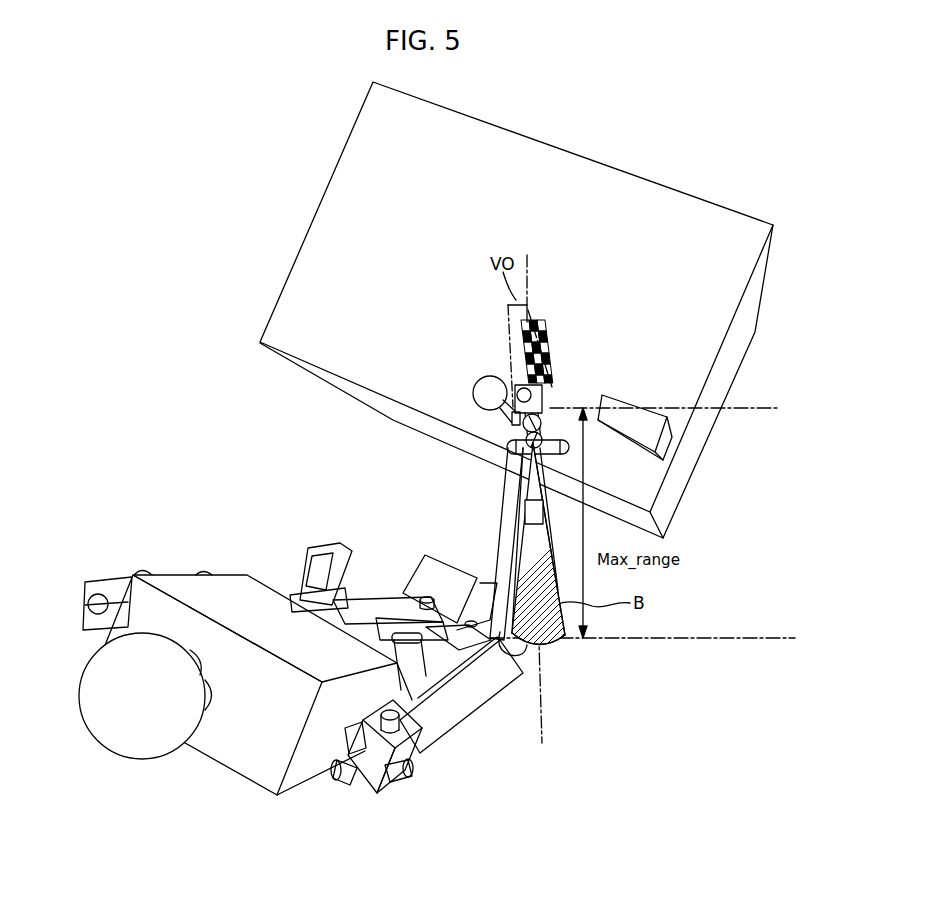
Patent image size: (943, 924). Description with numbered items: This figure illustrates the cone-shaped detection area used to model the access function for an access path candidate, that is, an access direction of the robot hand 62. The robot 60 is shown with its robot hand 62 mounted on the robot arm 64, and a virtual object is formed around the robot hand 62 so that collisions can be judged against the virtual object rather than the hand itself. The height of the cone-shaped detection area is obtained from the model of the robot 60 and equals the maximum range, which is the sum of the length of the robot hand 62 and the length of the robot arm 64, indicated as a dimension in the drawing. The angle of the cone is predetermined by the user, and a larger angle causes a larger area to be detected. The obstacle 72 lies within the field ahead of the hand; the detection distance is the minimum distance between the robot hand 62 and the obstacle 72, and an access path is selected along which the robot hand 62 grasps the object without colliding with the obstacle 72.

The robot 60 is at (132, 765).
The robot hand 62 is at (547, 398).
The robot arm 64 is at (510, 515).
The obstacle 72 is at (614, 396).